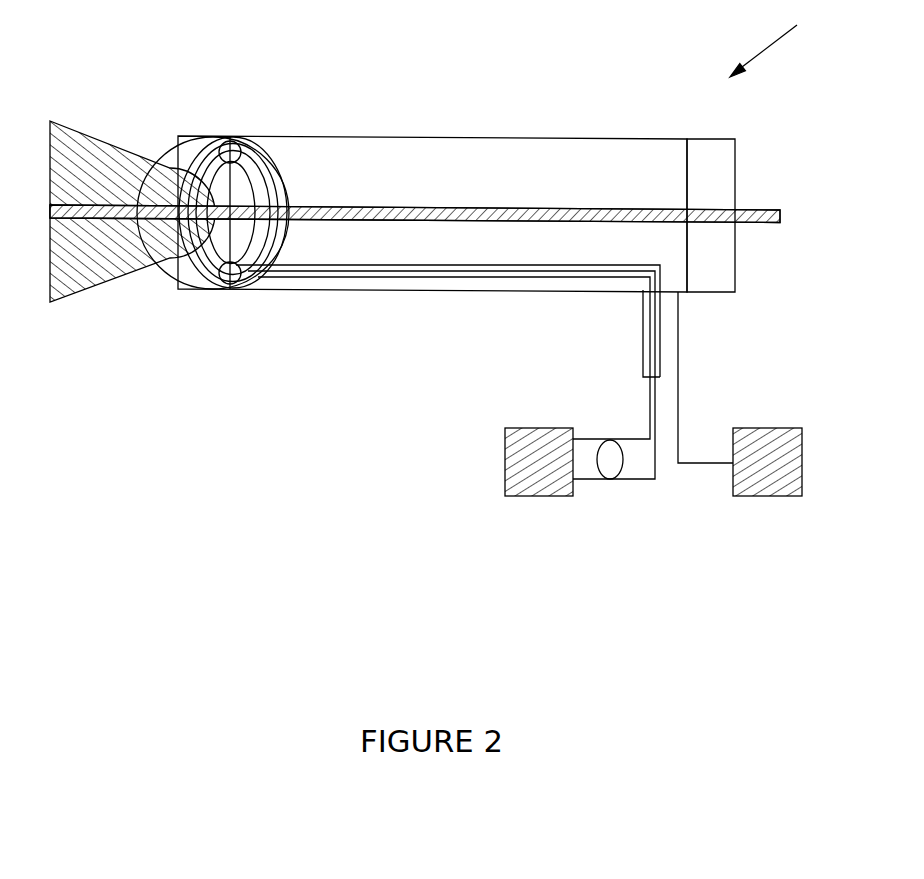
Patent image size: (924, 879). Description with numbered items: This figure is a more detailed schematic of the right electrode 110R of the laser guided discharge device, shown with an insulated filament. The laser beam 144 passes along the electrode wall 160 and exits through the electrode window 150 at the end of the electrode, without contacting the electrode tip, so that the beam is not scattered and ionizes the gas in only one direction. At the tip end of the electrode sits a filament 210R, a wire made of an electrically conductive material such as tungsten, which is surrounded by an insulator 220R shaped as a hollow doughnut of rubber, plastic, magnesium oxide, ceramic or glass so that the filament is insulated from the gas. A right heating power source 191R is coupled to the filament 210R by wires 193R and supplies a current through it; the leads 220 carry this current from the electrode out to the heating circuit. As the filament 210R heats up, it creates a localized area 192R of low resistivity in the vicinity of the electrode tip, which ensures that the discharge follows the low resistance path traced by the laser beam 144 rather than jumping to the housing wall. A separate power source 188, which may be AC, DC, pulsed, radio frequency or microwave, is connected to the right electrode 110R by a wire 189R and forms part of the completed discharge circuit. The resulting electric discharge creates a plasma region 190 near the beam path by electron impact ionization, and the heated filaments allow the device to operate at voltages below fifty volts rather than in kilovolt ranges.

The right electrode 110R is at (807, 42).
The laser beam 144 is at (92, 212).
The electrode window 150 is at (715, 165).
The electrode wall 160 is at (455, 137).
The power source 188 is at (767, 497).
The wire 189R is at (678, 377).
The plasma region 190 is at (118, 142).
The right heating power source 191R is at (540, 497).
The localized area of low resistivity 192R is at (167, 270).
The wires 193R is at (610, 440).
The filament 210R is at (232, 142).
The leads 220 is at (310, 273).
The insulator 220R is at (203, 147).